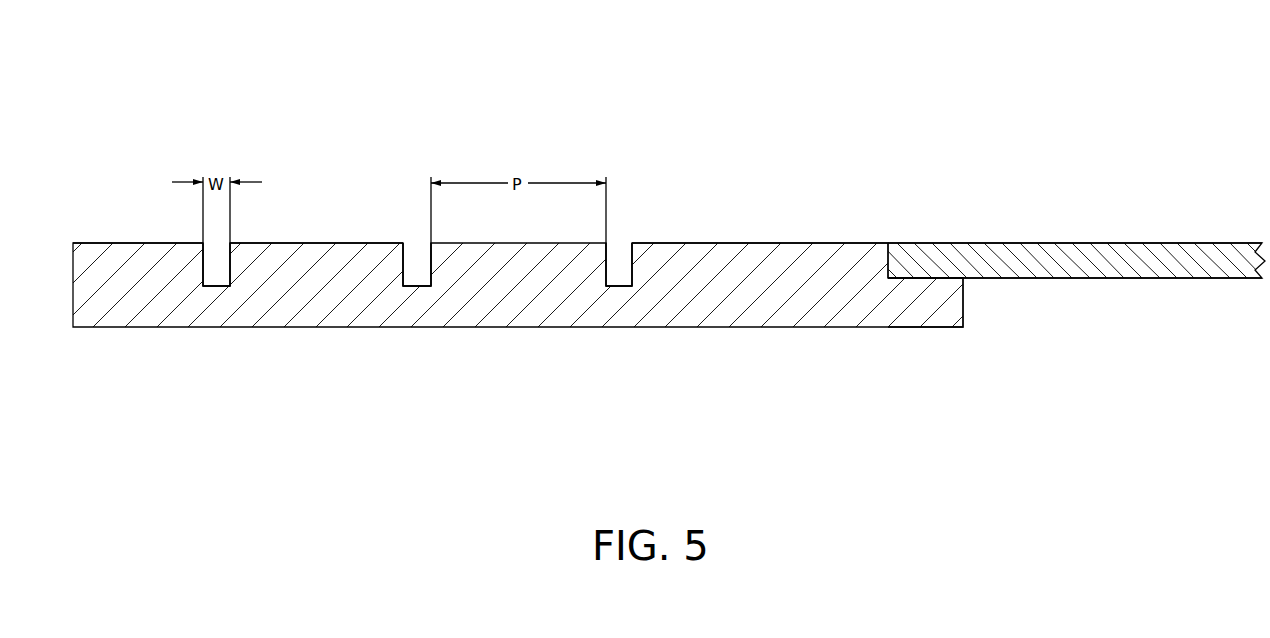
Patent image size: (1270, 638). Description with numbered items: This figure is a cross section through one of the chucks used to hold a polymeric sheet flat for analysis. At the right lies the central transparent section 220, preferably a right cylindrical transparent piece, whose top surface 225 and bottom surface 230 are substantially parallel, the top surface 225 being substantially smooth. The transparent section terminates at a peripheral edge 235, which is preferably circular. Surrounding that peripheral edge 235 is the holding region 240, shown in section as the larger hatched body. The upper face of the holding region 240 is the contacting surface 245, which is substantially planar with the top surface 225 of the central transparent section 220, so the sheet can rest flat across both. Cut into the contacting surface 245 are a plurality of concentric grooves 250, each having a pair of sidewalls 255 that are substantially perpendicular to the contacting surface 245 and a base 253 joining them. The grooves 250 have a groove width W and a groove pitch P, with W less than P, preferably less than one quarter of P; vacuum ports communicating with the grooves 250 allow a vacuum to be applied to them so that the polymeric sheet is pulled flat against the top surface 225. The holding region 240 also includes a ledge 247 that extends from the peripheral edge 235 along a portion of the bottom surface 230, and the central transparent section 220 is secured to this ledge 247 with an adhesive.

The central transparent section 220 is at (1158, 250).
The top surface 225 is at (1085, 243).
The bottom surface 230 is at (1080, 278).
The peripheral edge 235 is at (892, 257).
The holding region 240 is at (888, 95).
The contacting surface 245 is at (110, 243).
The ledge 247 is at (922, 280).
The concentric grooves 250 is at (217, 253).
The base 253 is at (213, 288).
The sidewalls 255 is at (231, 265).